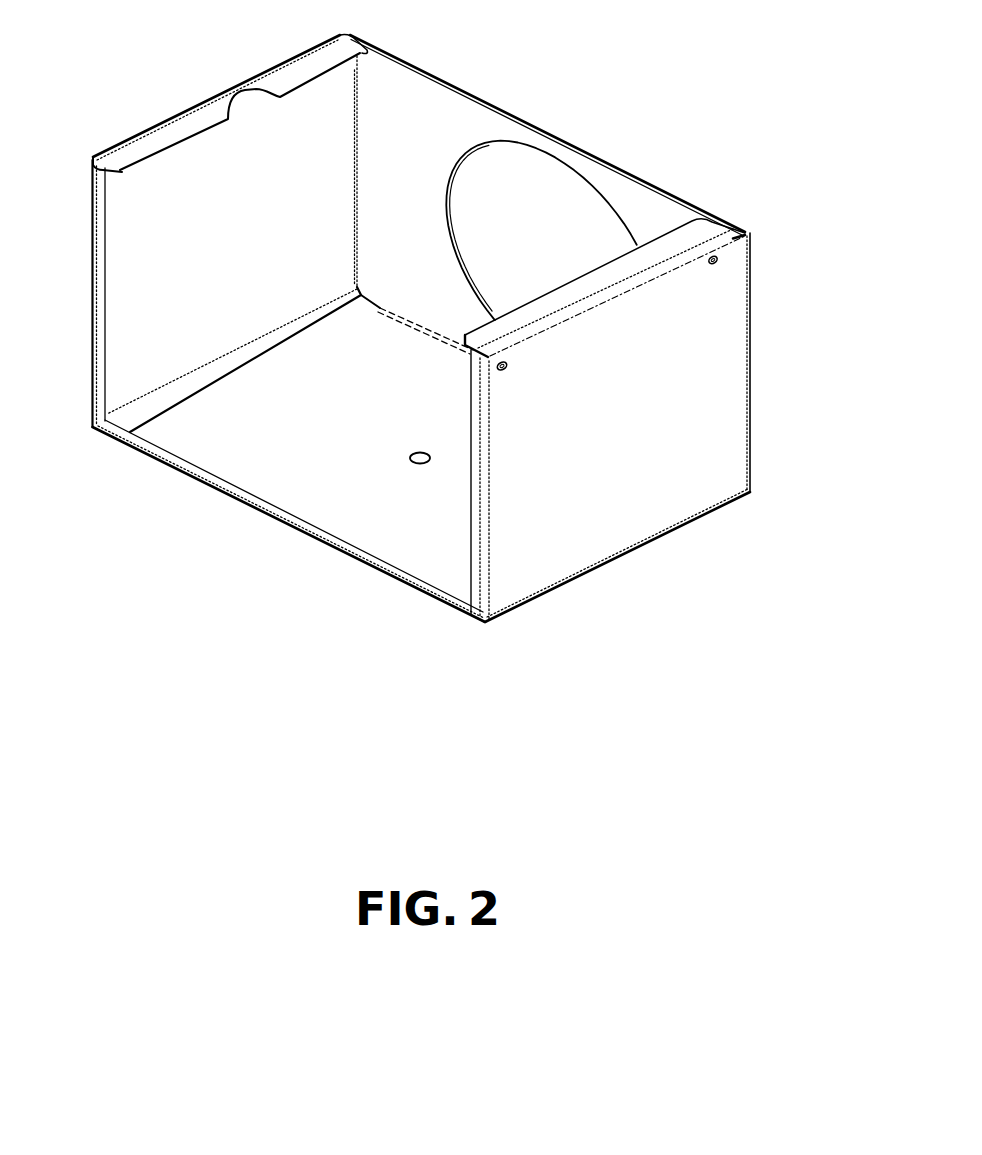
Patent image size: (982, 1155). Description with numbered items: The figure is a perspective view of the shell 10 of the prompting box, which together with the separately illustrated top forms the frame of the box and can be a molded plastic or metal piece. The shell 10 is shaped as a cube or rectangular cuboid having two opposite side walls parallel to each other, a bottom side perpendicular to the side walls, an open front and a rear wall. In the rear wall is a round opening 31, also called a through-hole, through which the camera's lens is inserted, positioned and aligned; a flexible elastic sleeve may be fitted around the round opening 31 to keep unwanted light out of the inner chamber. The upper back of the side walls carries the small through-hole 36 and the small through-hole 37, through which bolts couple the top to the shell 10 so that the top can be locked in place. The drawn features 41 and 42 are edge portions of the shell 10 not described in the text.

The shell 10 is at (697, 433).
The round opening 31 is at (532, 193).
The small through-hole 36 is at (718, 260).
The small through-hole 37 is at (505, 369).
The top flange of left side wall 41 is at (285, 70).
The top flange of right side wall 42 is at (688, 242).